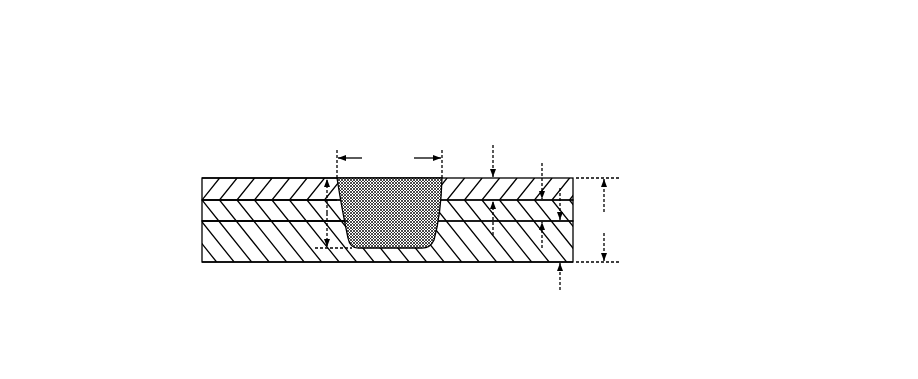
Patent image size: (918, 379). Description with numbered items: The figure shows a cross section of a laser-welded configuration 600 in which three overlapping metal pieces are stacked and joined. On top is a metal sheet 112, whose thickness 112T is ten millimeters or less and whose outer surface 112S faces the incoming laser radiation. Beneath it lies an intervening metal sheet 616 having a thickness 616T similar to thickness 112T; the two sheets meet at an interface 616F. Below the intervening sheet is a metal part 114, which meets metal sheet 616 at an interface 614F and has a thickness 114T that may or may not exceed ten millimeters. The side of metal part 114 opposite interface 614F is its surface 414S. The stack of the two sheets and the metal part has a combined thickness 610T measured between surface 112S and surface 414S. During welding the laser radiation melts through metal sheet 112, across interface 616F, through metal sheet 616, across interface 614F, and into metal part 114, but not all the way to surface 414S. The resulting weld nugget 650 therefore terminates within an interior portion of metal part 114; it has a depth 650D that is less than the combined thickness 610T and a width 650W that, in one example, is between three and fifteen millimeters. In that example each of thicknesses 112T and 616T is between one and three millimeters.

The configuration 600 is at (142, 47).
The metal sheet 112 is at (202, 190).
The surface of metal sheet 112S is at (217, 176).
The thickness of metal sheet 112T is at (493, 179).
The intervening metal sheet 616 is at (202, 210).
The interface 616F is at (271, 196).
The thickness of intervening metal sheet 616T is at (542, 195).
The interface 614F is at (308, 218).
The metal part 114 is at (202, 243).
The thickness of metal part 114T is at (560, 251).
The surface of metal part 414S is at (253, 264).
The combined thickness 610T is at (600, 220).
The weld nugget 650 is at (406, 222).
The width of weld nugget 650W is at (389, 163).
The depth of weld nugget 650D is at (324, 228).